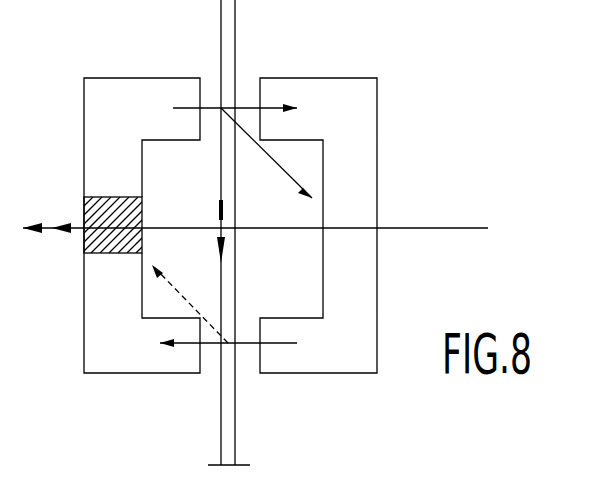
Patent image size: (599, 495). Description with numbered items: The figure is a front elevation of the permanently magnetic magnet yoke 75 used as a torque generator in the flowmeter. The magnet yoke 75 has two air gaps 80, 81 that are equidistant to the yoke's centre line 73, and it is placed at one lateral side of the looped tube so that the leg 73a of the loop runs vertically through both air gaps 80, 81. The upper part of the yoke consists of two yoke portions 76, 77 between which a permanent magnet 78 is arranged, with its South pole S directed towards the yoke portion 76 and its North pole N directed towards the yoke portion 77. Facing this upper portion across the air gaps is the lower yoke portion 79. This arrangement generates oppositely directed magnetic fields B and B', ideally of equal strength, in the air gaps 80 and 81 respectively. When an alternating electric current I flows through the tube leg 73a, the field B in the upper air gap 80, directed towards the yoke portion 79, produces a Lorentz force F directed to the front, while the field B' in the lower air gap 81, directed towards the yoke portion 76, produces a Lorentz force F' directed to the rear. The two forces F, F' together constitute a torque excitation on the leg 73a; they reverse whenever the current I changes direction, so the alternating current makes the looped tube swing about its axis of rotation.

The centre line 73 is at (437, 228).
The leg of the loop 73a is at (223, 278).
The magnet yoke 75 is at (392, 117).
The yoke portion 76 is at (128, 352).
The yoke portion 77 is at (107, 125).
The permanent magnet 78 is at (107, 215).
The lower yoke portion 79 is at (337, 100).
The air gap 80 is at (245, 92).
The air gap 81 is at (212, 357).
The magnetic field B is at (227, 70).
The magnetic field B' is at (228, 382).
The Lorentz force F is at (319, 153).
The Lorentz force F' is at (128, 304).
The alternating electric current I is at (218, 214).